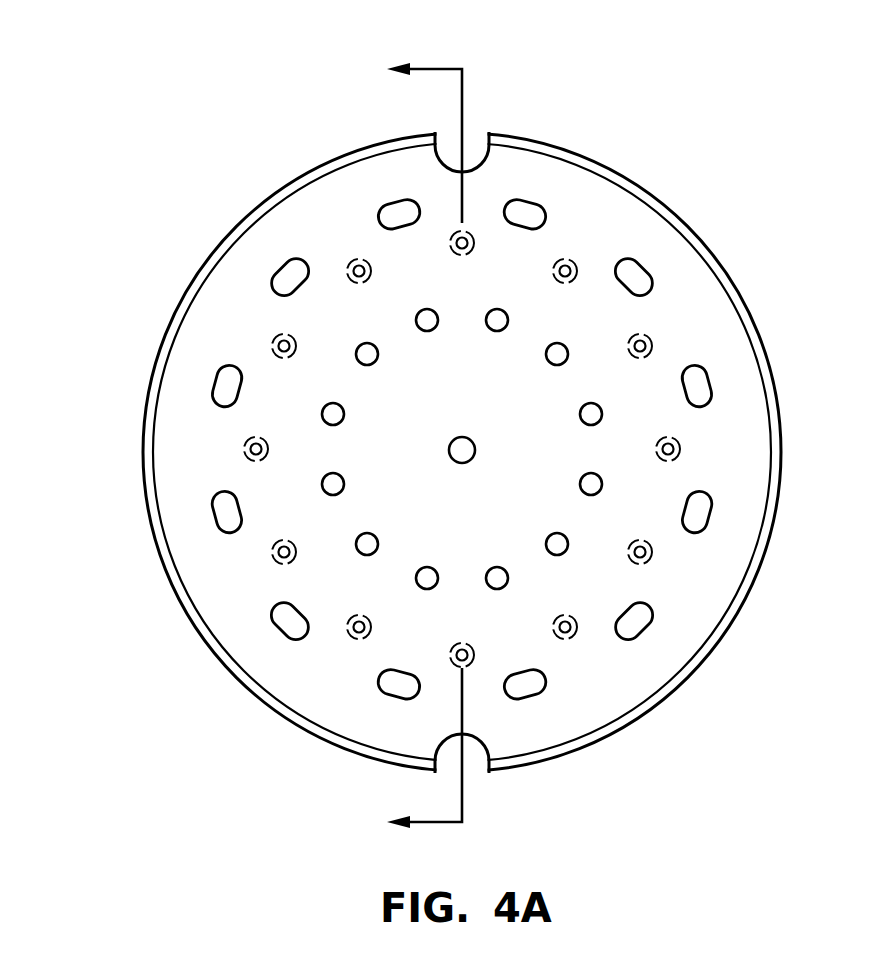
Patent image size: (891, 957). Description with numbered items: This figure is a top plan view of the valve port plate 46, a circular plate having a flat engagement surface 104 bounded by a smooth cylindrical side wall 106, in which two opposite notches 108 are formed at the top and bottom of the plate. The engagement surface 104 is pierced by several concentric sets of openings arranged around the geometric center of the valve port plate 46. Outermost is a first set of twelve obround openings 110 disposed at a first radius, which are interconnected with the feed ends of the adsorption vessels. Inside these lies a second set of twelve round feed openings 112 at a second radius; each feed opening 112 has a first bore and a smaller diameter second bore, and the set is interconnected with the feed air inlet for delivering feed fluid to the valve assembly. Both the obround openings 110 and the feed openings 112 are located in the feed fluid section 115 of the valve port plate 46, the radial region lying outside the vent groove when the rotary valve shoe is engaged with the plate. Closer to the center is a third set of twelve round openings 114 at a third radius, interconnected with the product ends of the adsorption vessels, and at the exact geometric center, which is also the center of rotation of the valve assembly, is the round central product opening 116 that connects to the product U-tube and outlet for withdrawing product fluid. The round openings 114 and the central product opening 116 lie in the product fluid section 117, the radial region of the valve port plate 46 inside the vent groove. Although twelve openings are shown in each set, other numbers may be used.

The valve port plate 46 is at (740, 185).
The flat engagement surface 104 is at (598, 685).
The smooth cylindrical side wall 106 is at (782, 447).
The notches 108 is at (438, 156).
The obround openings 110 is at (708, 517).
The round feed openings 112 is at (650, 562).
The round openings 114 is at (548, 362).
The central product opening 116 is at (455, 438).
The product fluid section 117 is at (435, 516).
The feed fluid section 115 is at (341, 682).